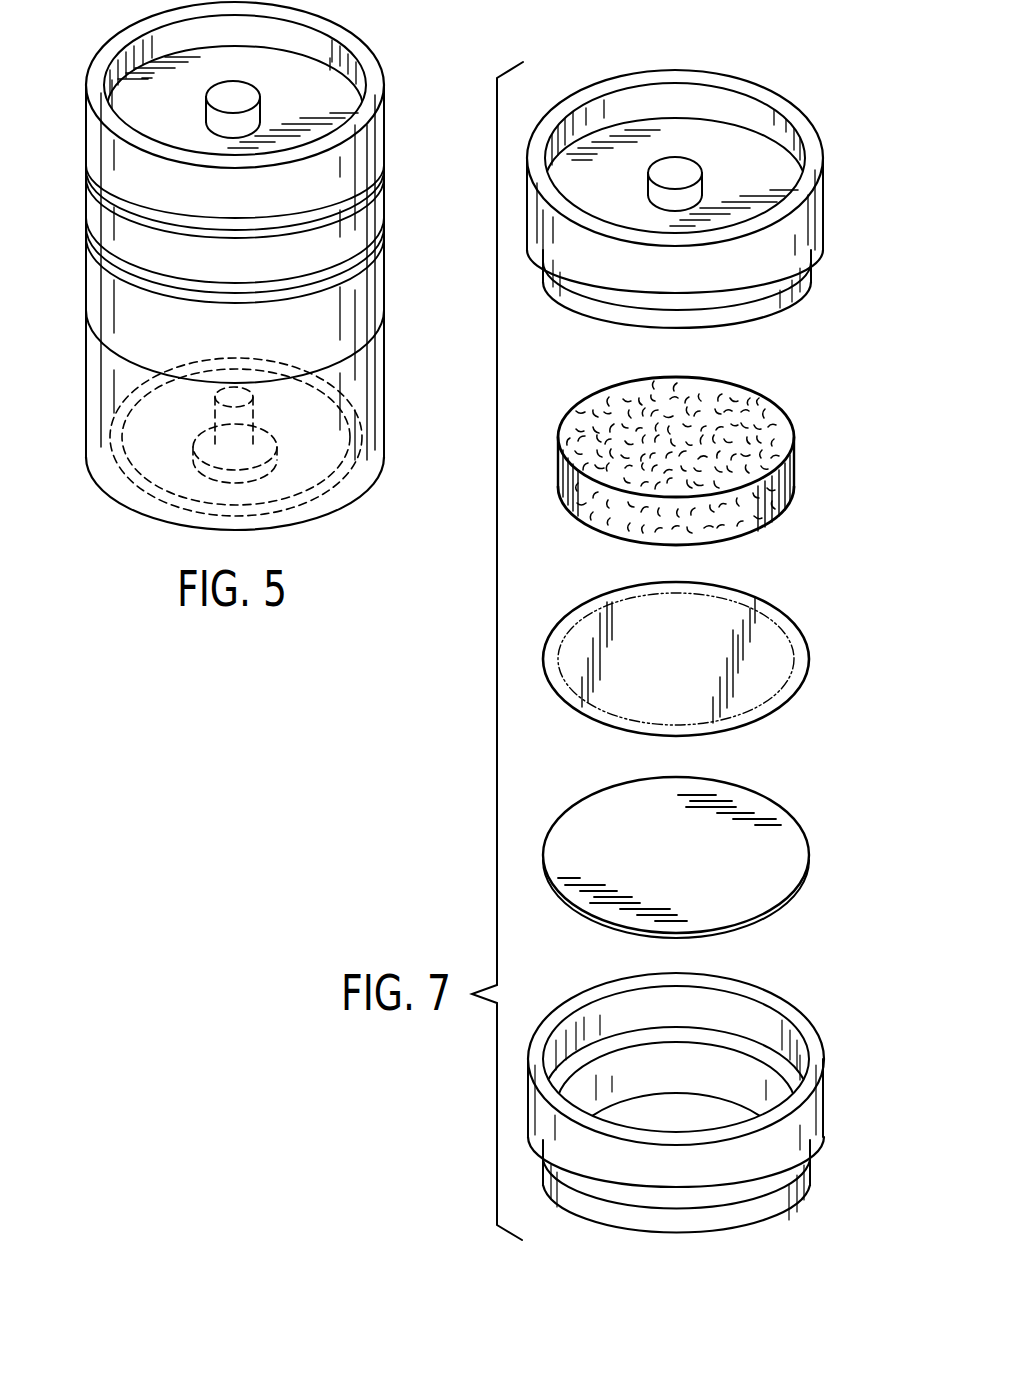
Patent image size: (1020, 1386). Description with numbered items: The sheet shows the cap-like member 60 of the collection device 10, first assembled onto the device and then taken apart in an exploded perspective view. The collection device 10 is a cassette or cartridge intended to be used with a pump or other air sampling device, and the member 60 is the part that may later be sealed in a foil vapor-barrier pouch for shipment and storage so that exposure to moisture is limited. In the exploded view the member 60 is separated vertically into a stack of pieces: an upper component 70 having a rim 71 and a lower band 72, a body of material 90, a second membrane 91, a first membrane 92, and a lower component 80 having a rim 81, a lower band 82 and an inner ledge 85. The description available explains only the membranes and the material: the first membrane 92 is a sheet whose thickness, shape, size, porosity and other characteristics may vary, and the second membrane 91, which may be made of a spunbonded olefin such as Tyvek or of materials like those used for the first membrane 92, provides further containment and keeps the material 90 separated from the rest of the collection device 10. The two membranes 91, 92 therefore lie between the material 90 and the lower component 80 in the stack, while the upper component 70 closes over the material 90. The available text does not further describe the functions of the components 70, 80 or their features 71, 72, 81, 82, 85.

In FIG. 5, the collection device 10 is at (63, 386).
In FIG. 5, the member 60 is at (74, 115).
In FIG. 7, the cap 70 is at (826, 120).
In FIG. 7, the cap rim 71 is at (640, 73).
In FIG. 7, the cap lower band 72 is at (790, 288).
In FIG. 7, the container body 80 is at (824, 1032).
In FIG. 7, the body rim 81 is at (603, 984).
In FIG. 7, the body lower band 82 is at (790, 1202).
In FIG. 7, the internal ledge 85 is at (708, 1035).
In FIG. 7, the material 90 is at (812, 430).
In FIG. 7, the second membrane 91 is at (816, 636).
In FIG. 7, the first membrane 92 is at (816, 841).